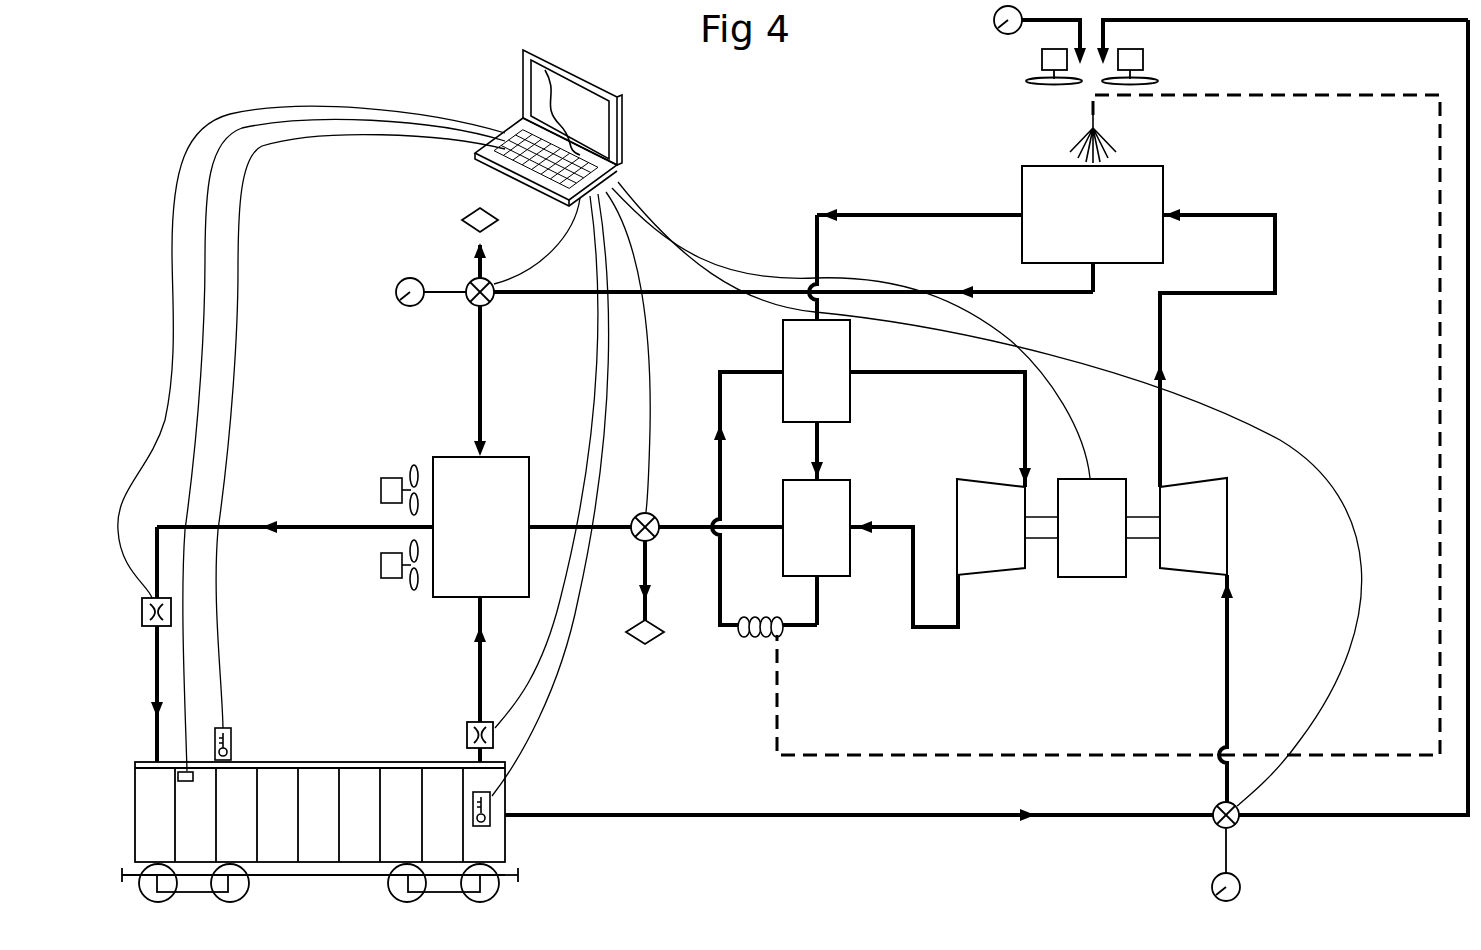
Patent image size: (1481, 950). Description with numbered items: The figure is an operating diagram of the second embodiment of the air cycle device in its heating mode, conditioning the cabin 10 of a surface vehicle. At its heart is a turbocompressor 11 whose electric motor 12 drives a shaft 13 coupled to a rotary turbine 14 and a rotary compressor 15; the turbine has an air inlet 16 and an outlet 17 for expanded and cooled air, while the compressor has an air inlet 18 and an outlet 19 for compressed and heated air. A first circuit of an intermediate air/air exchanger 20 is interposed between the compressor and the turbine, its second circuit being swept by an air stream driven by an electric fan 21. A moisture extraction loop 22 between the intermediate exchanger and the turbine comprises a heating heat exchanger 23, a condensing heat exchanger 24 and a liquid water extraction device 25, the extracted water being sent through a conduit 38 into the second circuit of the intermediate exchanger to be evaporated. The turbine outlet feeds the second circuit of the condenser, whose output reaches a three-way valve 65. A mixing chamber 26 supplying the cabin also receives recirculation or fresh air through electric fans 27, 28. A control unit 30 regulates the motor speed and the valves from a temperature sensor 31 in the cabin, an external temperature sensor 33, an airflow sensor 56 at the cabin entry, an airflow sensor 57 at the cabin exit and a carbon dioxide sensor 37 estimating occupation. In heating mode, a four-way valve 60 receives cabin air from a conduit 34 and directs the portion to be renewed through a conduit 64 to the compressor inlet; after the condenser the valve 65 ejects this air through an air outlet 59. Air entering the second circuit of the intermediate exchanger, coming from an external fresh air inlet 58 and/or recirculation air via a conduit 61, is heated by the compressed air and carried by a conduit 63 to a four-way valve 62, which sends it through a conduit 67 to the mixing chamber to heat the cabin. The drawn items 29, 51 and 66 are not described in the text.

The cabin 10 is at (268, 795).
The turbocompressor 11 is at (1116, 567).
The electric motor 12 is at (1103, 575).
The shaft 13 is at (1146, 535).
The rotary turbine 14 is at (995, 500).
The rotary compressor 15 is at (1232, 505).
The air inlet 16 is at (1032, 490).
The outlet 17 is at (913, 573).
The air inlet 18 is at (1232, 578).
The outlet 19 is at (1158, 490).
The intermediate air/air exchanger 20 is at (1158, 188).
The electric fan 21 is at (1042, 60).
The moisture extraction loop 22 is at (742, 475).
The heating air/air heat exchanger 23 is at (786, 352).
The condensing air/air heat exchanger 24 is at (835, 490).
The liquid water extraction device 25 is at (750, 636).
The mixing chamber 26 is at (503, 456).
The electric fan 27 is at (394, 578).
The electric fan 28 is at (392, 485).
The supply line 29 is at (478, 685).
The control unit 30 is at (522, 100).
The temperature sensor 31 is at (492, 800).
The temperature sensor 33 is at (225, 728).
The conduit 34 is at (816, 818).
The carbon dioxide sensor 37 is at (180, 770).
The conduit 38 is at (1086, 760).
The exhaust outlet 51 is at (913, 614).
The airflow sensor 56 is at (142, 610).
The airflow sensor 57 is at (467, 738).
The external fresh air inlet 58 is at (398, 296).
The air outlet 59 is at (465, 213).
The four-way valve 60 is at (1236, 826).
The conduit 61 is at (1368, 818).
The four-way valve 62 is at (470, 282).
The conduit 63 is at (731, 283).
The conduit 64 is at (1230, 648).
The three-way valve 65 is at (651, 514).
The drain line 66 is at (648, 575).
The conduit 67 is at (478, 372).